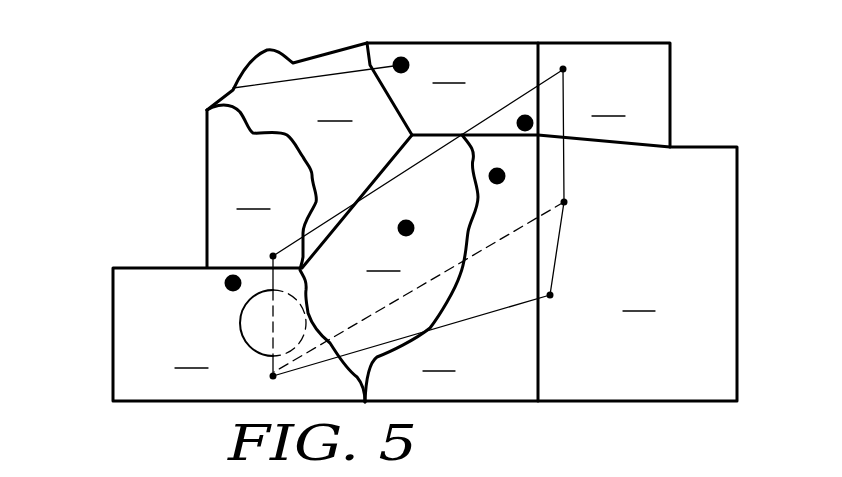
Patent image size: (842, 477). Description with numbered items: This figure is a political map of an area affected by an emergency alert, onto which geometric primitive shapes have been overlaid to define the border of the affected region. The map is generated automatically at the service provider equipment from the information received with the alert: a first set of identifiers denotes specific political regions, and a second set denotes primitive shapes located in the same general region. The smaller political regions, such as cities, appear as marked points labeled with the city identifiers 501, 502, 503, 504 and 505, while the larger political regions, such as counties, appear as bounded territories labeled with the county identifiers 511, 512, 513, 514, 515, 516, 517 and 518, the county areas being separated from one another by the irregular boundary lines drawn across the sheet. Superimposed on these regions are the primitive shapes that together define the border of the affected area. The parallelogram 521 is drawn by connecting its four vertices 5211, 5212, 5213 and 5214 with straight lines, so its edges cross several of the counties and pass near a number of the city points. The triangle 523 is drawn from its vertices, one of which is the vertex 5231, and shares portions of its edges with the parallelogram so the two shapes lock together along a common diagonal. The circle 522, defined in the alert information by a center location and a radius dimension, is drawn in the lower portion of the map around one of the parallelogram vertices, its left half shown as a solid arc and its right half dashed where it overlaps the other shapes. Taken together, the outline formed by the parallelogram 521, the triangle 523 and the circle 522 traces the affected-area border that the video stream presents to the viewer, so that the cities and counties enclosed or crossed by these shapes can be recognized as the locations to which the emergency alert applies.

The political region identifier 501 is at (233, 283).
The political region identifier 502 is at (233, 88).
The political region identifier 503 is at (525, 123).
The political region identifier 504 is at (497, 176).
The political region identifier 505 is at (406, 228).
The political region identifier 511 is at (191, 357).
The political region identifier 512 is at (286, 253).
The political region identifier 513 is at (357, 155).
The political region identifier 514 is at (449, 72).
The political region identifier 515 is at (608, 105).
The political region identifier 516 is at (639, 300).
The political region identifier 517 is at (439, 360).
The political region identifier 518 is at (421, 268).
The parallelogram 521 is at (522, 90).
The vertex 5211 is at (273, 256).
The vertex 5212 is at (563, 69).
The vertex 5213 is at (564, 202).
The vertex 5214 is at (273, 376).
The circle 522 is at (240, 320).
The triangle 523 is at (502, 312).
The vertex 5231 is at (550, 295).